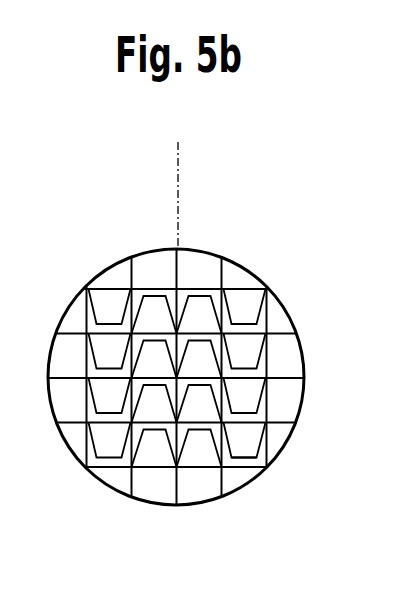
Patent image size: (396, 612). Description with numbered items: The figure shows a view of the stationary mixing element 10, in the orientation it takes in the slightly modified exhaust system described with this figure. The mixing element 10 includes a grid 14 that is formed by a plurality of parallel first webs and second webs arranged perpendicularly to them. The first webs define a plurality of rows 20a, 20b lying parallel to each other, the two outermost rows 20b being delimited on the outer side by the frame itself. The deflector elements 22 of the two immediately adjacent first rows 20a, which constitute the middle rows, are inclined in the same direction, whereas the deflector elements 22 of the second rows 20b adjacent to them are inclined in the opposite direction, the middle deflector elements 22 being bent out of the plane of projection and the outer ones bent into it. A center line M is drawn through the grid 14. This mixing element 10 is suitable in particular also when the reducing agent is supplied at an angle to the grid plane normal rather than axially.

The mixing element 10 is at (262, 477).
The grid 14 is at (268, 331).
The first rows 20a is at (197, 478).
The second rows 20b is at (113, 286).
The deflector elements 22 is at (242, 450).
The center axis M is at (178, 171).